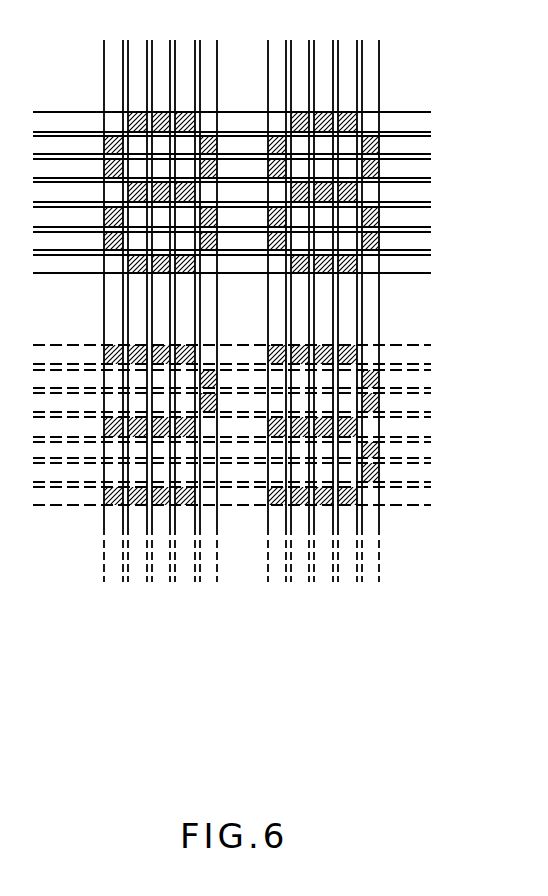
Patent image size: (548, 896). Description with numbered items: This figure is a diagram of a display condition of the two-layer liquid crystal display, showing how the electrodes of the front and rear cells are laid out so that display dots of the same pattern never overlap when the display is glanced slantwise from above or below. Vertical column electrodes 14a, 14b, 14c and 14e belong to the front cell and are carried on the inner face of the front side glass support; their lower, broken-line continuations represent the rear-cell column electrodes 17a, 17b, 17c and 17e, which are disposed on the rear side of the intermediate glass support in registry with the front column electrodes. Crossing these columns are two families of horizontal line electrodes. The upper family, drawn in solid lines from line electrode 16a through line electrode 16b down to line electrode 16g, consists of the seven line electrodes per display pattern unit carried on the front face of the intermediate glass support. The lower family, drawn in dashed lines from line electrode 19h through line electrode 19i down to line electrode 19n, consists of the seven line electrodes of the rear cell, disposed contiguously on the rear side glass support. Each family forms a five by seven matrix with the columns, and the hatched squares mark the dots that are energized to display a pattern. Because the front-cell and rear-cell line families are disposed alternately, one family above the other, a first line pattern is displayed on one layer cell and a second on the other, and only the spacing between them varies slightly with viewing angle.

The column electrode 14a is at (113, 52).
The column electrode 14b is at (138, 52).
The column electrode 14c is at (164, 52).
The column electrode 14e is at (207, 53).
The line electrode 16a is at (425, 118).
The line electrode 16b is at (424, 143).
The line electrode 16g is at (421, 263).
The column electrode 17a is at (113, 572).
The column electrode 17b is at (140, 572).
The column electrode 17c is at (164, 572).
The column electrode 17e is at (207, 572).
The line electrode 19h is at (424, 357).
The line electrode 19i is at (424, 404).
The line electrode 19n is at (424, 496).